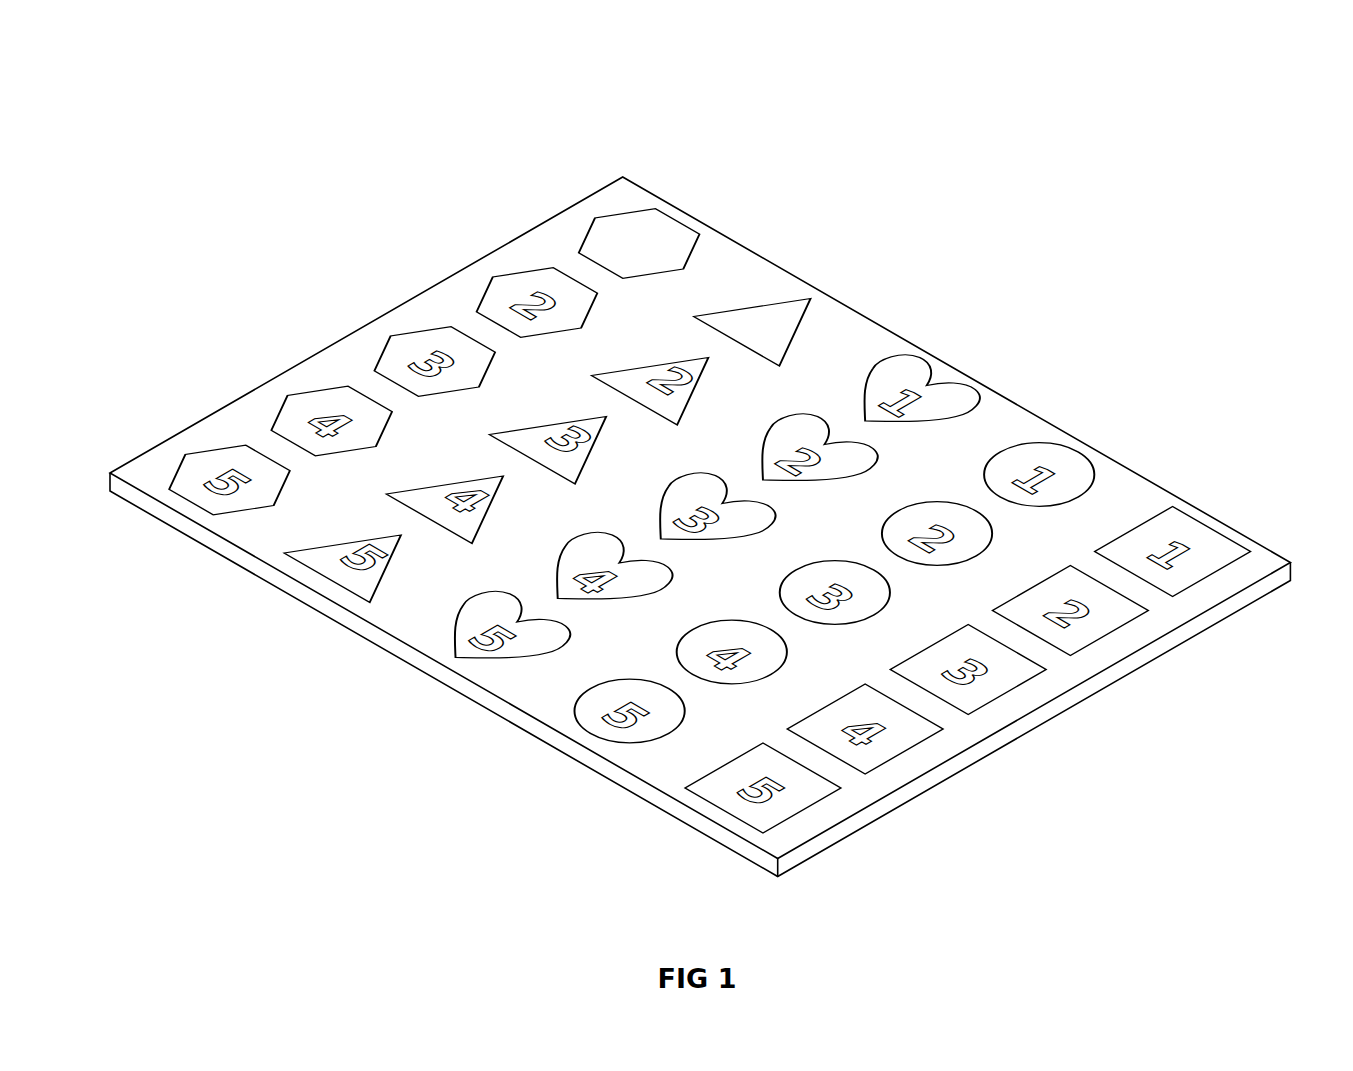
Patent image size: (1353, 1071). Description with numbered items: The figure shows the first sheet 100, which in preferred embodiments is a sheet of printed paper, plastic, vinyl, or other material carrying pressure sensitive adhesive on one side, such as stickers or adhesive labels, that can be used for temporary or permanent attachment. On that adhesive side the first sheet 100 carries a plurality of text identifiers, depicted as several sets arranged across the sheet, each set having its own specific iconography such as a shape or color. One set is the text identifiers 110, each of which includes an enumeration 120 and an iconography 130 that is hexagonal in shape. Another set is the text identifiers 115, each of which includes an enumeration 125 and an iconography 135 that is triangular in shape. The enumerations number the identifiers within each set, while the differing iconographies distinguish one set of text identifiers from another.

The first sheet 100 is at (256, 158).
The text identifier 110 is at (655, 222).
The iconography 130 is at (677, 214).
The enumeration 120 is at (640, 236).
The text identifier 115 is at (798, 304).
The iconography 135 is at (735, 308).
The enumeration 125 is at (786, 331).